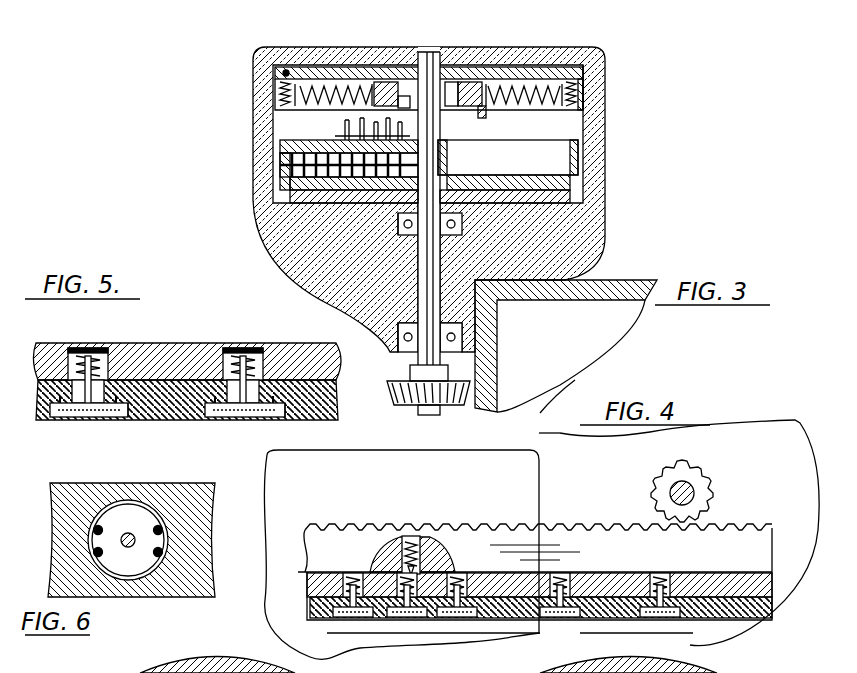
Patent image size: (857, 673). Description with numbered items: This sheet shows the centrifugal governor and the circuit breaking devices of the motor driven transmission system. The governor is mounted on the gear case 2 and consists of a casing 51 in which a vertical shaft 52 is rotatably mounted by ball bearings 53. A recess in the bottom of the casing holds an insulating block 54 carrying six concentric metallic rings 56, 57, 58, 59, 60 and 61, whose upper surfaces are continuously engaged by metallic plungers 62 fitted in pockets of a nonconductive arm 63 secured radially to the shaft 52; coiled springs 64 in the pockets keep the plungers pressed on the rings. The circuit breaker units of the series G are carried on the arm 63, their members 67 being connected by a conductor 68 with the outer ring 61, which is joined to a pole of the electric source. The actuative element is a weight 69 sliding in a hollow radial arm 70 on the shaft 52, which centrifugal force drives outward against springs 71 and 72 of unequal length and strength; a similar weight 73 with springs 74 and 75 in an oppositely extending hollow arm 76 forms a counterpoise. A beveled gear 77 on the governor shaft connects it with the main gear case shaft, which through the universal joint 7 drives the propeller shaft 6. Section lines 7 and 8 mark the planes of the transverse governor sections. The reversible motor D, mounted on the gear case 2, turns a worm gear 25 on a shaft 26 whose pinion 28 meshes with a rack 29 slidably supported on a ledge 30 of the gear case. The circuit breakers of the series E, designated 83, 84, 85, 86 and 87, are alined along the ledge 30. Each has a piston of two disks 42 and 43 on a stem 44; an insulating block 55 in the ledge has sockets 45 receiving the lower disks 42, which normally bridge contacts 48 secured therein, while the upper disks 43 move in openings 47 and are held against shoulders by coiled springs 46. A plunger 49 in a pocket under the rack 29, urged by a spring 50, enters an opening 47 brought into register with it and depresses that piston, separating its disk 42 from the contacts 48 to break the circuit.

In FIG. 3, the gear case 2 is at (632, 280).
In FIG. 5, the propeller shaft 6 is at (50, 407).
In FIG. 3, the universal joint 7 is at (275, 95).
In FIG. 3, the section line 8- 8 is at (418, 122).
In FIG. 4, the worm gear 25 is at (740, 418).
In FIG. 4, the shaft 26 is at (697, 491).
In FIG. 4, the pinion 28 is at (703, 471).
In FIG. 4, the rack 29 is at (313, 542).
In FIG. 5, the ledge 30 is at (173, 347).
In FIG. 4, the ledge 30 is at (773, 601).
In FIG. 5, the lower disk 42 is at (110, 417).
In FIG. 6, the lower disk 42 is at (125, 565).
In FIG. 5, the upper disk 43 is at (86, 347).
In FIG. 5, the stem 44 is at (86, 396).
In FIG. 6, the stem 44 is at (132, 536).
In FIG. 5, the socket 45 is at (127, 418).
In FIG. 6, the socket 45 is at (147, 578).
In FIG. 5, the spring 46 is at (72, 350).
In FIG. 5, the opening 47 is at (103, 368).
In FIG. 5, the contacts 48 is at (52, 415).
In FIG. 6, the contacts 48 is at (93, 530).
In FIG. 4, the plunger 49 is at (433, 558).
In FIG. 4, the spring 50 is at (418, 540).
In FIG. 3, the casing 51 is at (606, 224).
In FIG. 6, the casing 51 is at (135, 663).
In FIG. 4, the casing 51 is at (748, 672).
In FIG. 3, the vertical shaft 52 is at (436, 58).
In FIG. 3, the ball bearings 53 is at (330, 238).
In FIG. 3, the insulating block 54 is at (388, 215).
In FIG. 5, the insulating block 55 is at (332, 397).
In FIG. 3, the metallic ring 56 is at (457, 174).
In FIG. 3, the metallic ring 57 is at (481, 174).
In FIG. 3, the metallic ring 58 is at (503, 174).
In FIG. 3, the metallic ring 59 is at (575, 168).
In FIG. 3, the metallic ring 60 is at (580, 172).
In FIG. 3, the outer ring 61 is at (295, 202).
In FIG. 3, the metallic plunger 62 is at (280, 182).
In FIG. 3, the arm 63 is at (278, 158).
In FIG. 3, the coiled spring 64 is at (275, 168).
In FIG. 3, the circuit breaker member 67 is at (425, 121).
In FIG. 3, the conductor 68 is at (275, 147).
In FIG. 3, the weight 69 is at (392, 85).
In FIG. 3, the hollow radial arm 70 is at (298, 78).
In FIG. 3, the spring 71 is at (320, 92).
In FIG. 3, the spring 72 is at (366, 84).
In FIG. 3, the weight 73 is at (475, 82).
In FIG. 3, the spring 74 is at (507, 84).
In FIG. 3, the spring 75 is at (557, 80).
In FIG. 3, the hollow arm 76 is at (589, 50).
In FIG. 3, the beveled gear 77 is at (390, 404).
In FIG. 4, the circuit breaker unit 83 is at (358, 620).
In FIG. 4, the circuit breaker unit 84 is at (412, 620).
In FIG. 4, the circuit breaker unit 85 is at (464, 620).
In FIG. 4, the circuit breaker unit 86 is at (558, 620).
In FIG. 4, the circuit breaker unit 87 is at (677, 616).
In FIG. 3, the reversible motor D is at (605, 66).
In FIG. 4, the series of circuit breaking devices E is at (536, 630).
In FIG. 3, the series of circuit breaking units G is at (344, 130).